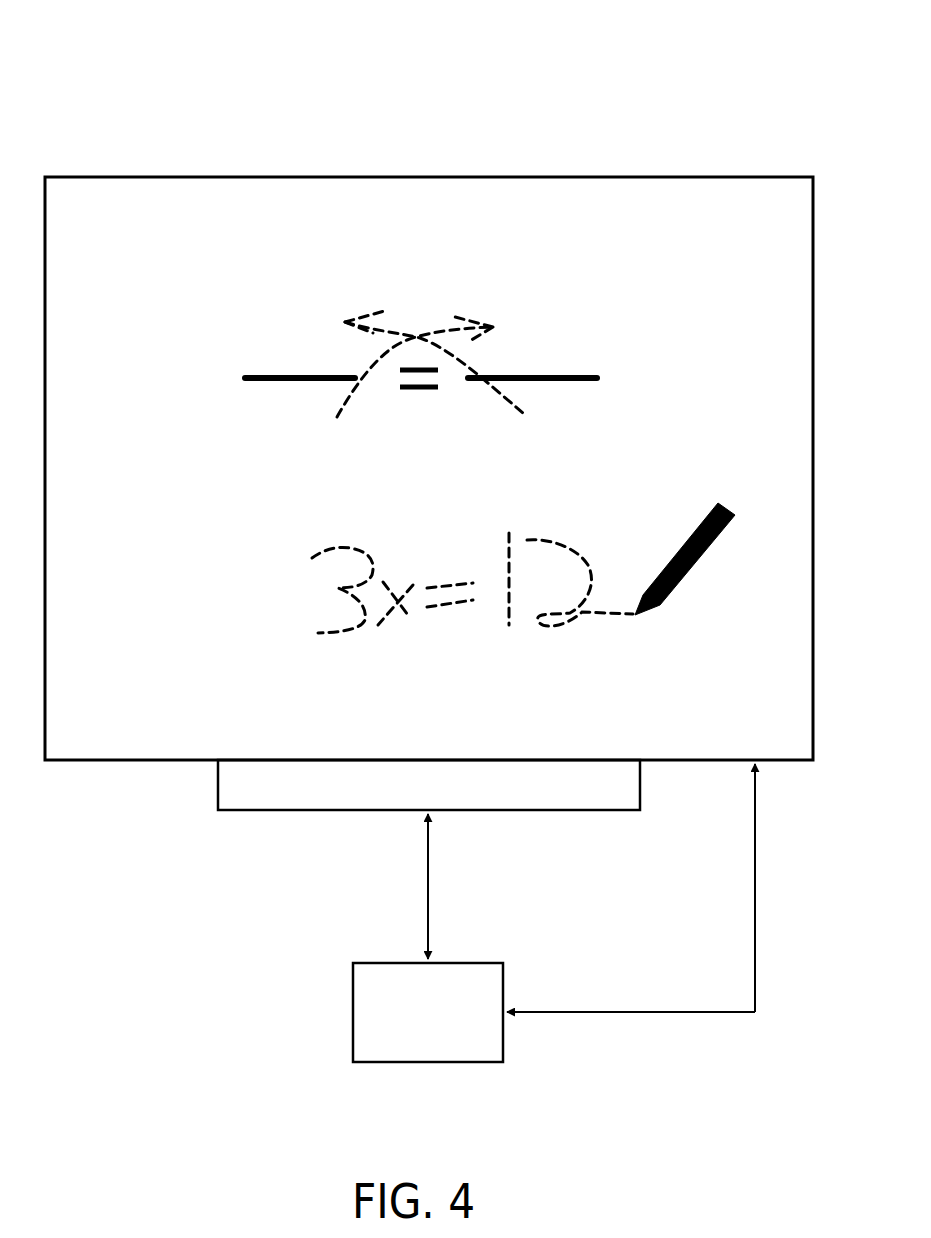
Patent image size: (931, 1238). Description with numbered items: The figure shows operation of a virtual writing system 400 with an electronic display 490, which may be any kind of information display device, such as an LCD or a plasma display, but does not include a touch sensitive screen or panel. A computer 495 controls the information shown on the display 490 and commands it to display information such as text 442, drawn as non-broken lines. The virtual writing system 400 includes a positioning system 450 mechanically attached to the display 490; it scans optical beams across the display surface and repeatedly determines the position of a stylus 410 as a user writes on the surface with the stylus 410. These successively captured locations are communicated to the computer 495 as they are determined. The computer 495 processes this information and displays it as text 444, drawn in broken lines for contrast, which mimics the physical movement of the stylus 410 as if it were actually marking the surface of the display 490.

The virtual writing system 400 is at (724, 60).
The stylus 410 is at (706, 571).
The text 442 is at (238, 369).
The text 444 is at (468, 305).
The positioning system 450 is at (429, 785).
The electronic display 490 is at (113, 768).
The computer 495 is at (428, 1012).